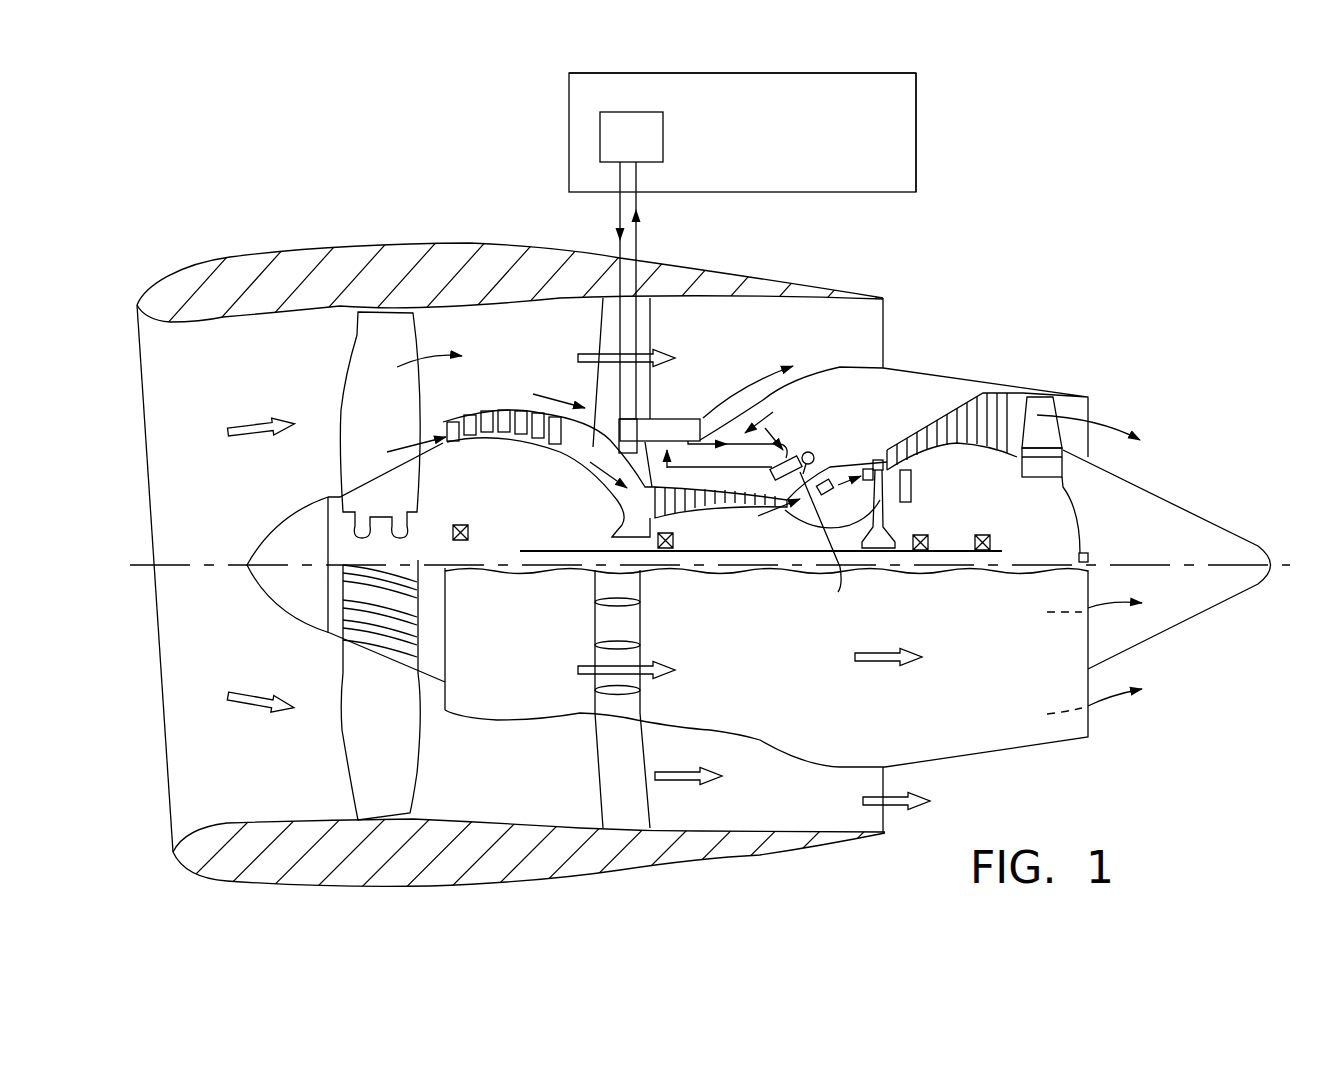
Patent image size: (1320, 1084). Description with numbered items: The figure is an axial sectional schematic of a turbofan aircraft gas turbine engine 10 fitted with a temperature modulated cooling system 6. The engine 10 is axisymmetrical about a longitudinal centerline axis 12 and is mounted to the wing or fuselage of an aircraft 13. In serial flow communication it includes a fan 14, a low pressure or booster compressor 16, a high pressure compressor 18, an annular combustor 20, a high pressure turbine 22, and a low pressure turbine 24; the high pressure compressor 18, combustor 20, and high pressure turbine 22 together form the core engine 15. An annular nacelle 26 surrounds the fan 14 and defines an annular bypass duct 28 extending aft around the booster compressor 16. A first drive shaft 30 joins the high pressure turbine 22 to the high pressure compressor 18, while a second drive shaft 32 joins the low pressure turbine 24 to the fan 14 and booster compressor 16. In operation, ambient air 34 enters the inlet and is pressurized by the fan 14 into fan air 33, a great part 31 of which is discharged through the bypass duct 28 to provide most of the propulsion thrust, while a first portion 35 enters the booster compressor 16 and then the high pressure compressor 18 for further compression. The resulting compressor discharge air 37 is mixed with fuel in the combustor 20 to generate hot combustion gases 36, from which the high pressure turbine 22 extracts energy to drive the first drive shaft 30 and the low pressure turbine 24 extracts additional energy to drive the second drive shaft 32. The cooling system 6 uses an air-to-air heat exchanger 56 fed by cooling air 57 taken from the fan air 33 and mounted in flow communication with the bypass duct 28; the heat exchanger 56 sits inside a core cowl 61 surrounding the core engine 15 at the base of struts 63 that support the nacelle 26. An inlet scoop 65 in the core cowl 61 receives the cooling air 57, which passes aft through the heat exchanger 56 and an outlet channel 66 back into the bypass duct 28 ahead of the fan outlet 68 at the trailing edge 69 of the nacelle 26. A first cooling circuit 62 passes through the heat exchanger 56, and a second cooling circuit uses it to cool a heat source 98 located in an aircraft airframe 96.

The temperature modulated cooling system 6 is at (547, 133).
The turbofan aircraft gas turbine engine 10 is at (1042, 283).
The centerline axis 12 is at (1170, 563).
The aircraft 13 is at (771, 142).
The fan 14 is at (367, 406).
The core engine 15 is at (667, 568).
The booster compressor 16 is at (495, 416).
The high pressure compressor 18 is at (691, 514).
The annular combustor 20 is at (851, 533).
The high pressure turbine 22 is at (889, 445).
The low pressure turbine 24 is at (972, 402).
The nacelle 26 is at (415, 294).
The bypass duct 28 is at (755, 341).
The first drive shaft 30 is at (785, 512).
The great part of fan air 31 is at (575, 460).
The second drive shaft 32 is at (732, 551).
The fan air 33 is at (420, 365).
The ambient air 34 is at (265, 693).
The first portion of fan air 35 is at (410, 447).
The hot combustion gases 36 is at (1097, 425).
The compressor discharge air 37 is at (794, 504).
The air-to-air heat exchanger 56 is at (680, 403).
The cooling air 57 is at (555, 392).
The core cowl 61 is at (670, 419).
The first cooling circuit 62 is at (772, 422).
The struts 63 is at (652, 312).
The inlet scoop 65 is at (607, 419).
The outlet channel 66 is at (760, 443).
The fan outlet 68 is at (887, 330).
The trailing edge 69 is at (890, 298).
The aircraft airframe 96 is at (916, 134).
The heat source 98 is at (616, 149).